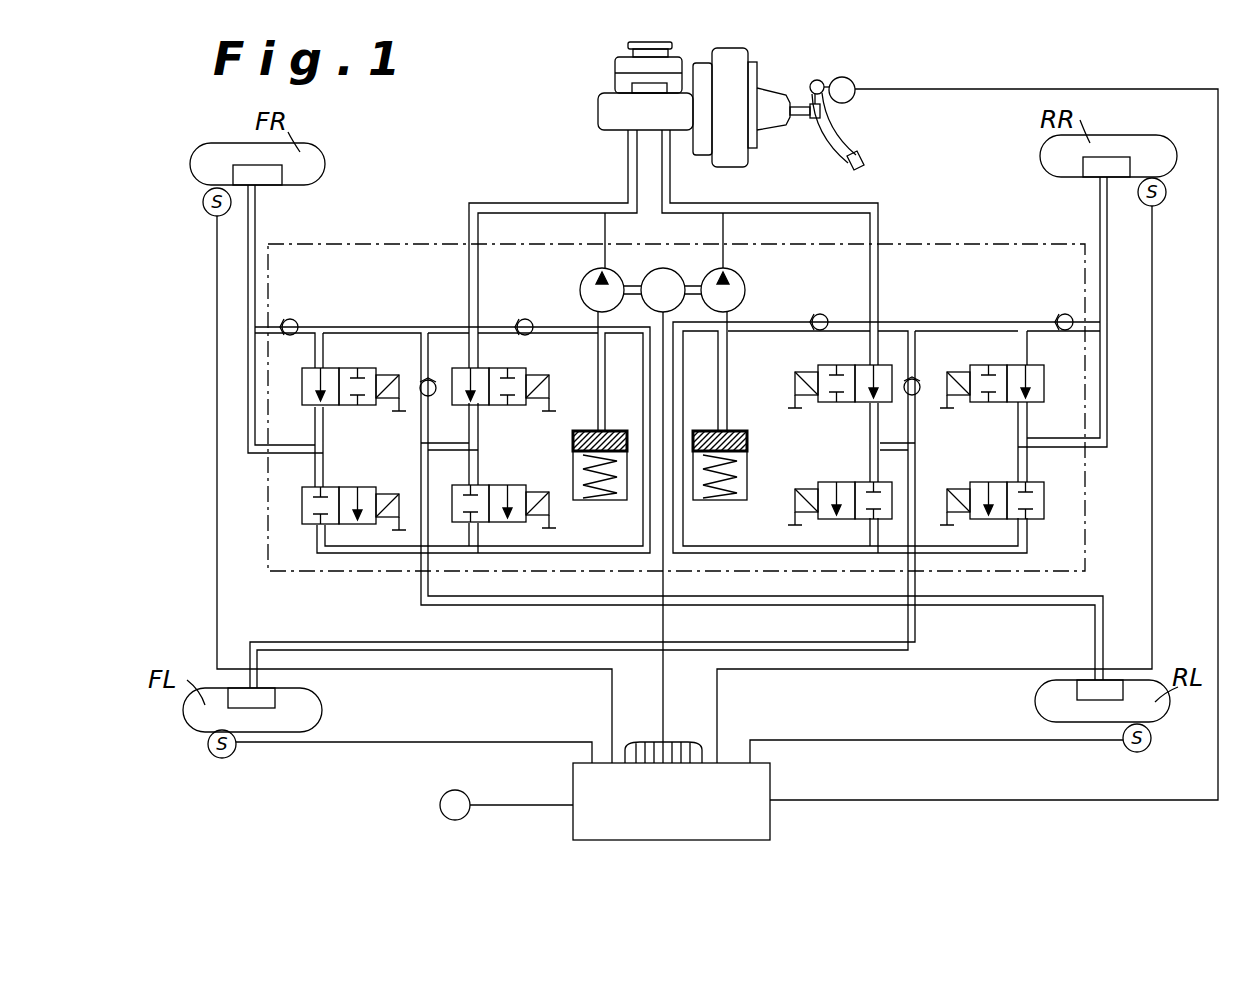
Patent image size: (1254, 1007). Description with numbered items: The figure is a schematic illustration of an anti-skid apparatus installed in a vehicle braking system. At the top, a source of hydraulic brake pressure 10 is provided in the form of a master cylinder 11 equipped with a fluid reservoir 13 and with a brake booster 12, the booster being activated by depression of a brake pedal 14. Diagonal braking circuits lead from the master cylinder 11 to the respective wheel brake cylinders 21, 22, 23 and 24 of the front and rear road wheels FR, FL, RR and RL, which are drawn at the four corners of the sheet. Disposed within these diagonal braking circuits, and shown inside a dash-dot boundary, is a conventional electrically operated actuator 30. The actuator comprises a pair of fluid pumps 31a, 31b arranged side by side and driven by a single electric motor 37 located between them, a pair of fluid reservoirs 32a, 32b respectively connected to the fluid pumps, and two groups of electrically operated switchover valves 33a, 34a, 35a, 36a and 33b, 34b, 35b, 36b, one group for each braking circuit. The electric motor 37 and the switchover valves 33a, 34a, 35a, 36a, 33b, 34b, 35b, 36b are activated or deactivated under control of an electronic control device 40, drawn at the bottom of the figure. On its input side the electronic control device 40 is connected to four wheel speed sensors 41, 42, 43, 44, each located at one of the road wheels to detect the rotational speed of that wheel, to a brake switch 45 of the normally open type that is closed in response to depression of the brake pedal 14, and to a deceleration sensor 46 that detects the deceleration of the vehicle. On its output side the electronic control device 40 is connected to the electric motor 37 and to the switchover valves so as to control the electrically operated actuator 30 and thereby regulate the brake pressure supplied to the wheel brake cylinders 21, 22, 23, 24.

The source of hydraulic brake pressure 10 is at (595, 85).
The master cylinder 11 is at (615, 118).
The brake booster 12 is at (748, 160).
The fluid reservoir 13 is at (620, 62).
The brake pedal 14 is at (860, 162).
The wheel brake cylinder 21 is at (283, 186).
The wheel brake cylinder 22 is at (277, 703).
The wheel brake cylinder 23 is at (1093, 180).
The wheel brake cylinder 24 is at (1087, 692).
The electrically operated actuator 30 is at (369, 238).
The fluid pump 31a is at (580, 292).
The fluid pump 31b is at (745, 290).
The fluid reservoir 32a is at (580, 502).
The fluid reservoir 32b is at (703, 502).
The switchover valve 33a is at (340, 368).
The switchover valve 34a is at (338, 487).
The switchover valve 35a is at (520, 368).
The switchover valve 36a is at (498, 485).
The switchover valve 33b is at (823, 365).
The switchover valve 34b is at (845, 482).
The switchover valve 35b is at (983, 365).
The switchover valve 36b is at (997, 482).
The electric motor 37 is at (655, 268).
The electronic control device 40 is at (710, 840).
The wheel speed sensor 41 is at (206, 215).
The wheel speed sensor 42 is at (208, 753).
The wheel speed sensor 43 is at (1167, 190).
The wheel speed sensor 44 is at (1130, 751).
The brake switch 45 is at (848, 80).
The deceleration sensor 46 is at (440, 805).